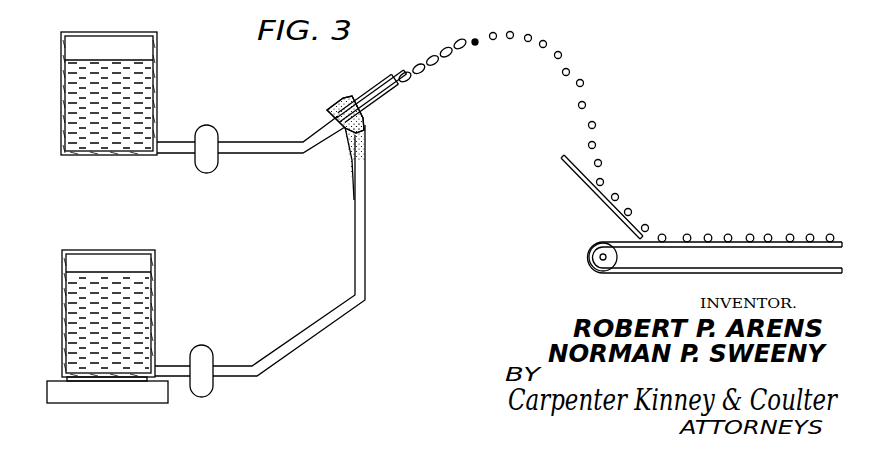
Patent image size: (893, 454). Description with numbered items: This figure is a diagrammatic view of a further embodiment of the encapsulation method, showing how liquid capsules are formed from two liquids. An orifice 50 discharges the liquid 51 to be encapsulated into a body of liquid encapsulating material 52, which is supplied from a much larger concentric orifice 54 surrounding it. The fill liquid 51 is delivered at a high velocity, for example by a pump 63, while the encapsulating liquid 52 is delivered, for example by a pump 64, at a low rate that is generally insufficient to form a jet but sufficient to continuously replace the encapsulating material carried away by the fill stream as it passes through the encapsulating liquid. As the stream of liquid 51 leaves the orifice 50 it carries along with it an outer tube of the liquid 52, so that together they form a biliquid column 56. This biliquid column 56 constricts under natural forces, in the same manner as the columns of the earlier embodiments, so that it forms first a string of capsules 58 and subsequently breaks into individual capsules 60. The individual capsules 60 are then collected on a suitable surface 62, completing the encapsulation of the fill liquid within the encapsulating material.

The orifice 50 is at (363, 117).
The liquid to be encapsulated 51 is at (75, 80).
The liquid encapsulating material 52 is at (77, 305).
The concentric orifice 54 is at (353, 102).
The biliquid column 56 is at (365, 108).
The string of capsules 58 is at (427, 70).
The individual capsules 60 is at (555, 56).
The surface 62 is at (583, 180).
The pump 63 is at (213, 100).
The pump 64 is at (198, 345).